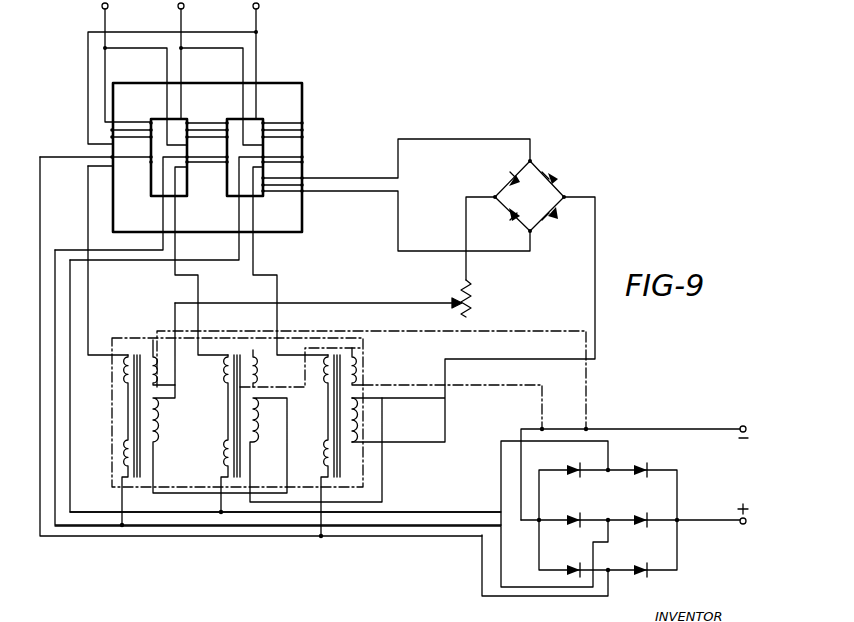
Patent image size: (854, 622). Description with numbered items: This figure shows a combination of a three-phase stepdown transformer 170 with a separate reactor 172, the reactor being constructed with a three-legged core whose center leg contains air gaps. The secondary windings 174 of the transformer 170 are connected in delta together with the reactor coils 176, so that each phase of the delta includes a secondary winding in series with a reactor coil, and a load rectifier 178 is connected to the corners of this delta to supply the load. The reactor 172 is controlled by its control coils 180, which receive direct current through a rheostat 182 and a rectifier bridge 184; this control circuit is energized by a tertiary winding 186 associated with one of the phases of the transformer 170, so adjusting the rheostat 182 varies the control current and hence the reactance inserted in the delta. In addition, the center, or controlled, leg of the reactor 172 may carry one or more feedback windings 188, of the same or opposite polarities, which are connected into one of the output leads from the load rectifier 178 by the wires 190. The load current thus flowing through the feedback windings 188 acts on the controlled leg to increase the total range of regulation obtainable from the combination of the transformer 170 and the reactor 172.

The three-phase stepdown transformer 170 is at (293, 90).
The reactor 172 is at (363, 489).
The secondary windings 174 is at (129, 163).
The reactor coils 176 is at (328, 400).
The load rectifier 178 is at (650, 494).
The control coils 180 is at (155, 436).
The rheostat 182 is at (472, 292).
The rectifier bridge 184 is at (547, 195).
The tertiary winding 186 is at (305, 188).
The feedback windings 188 is at (150, 353).
The wires 190 is at (545, 396).